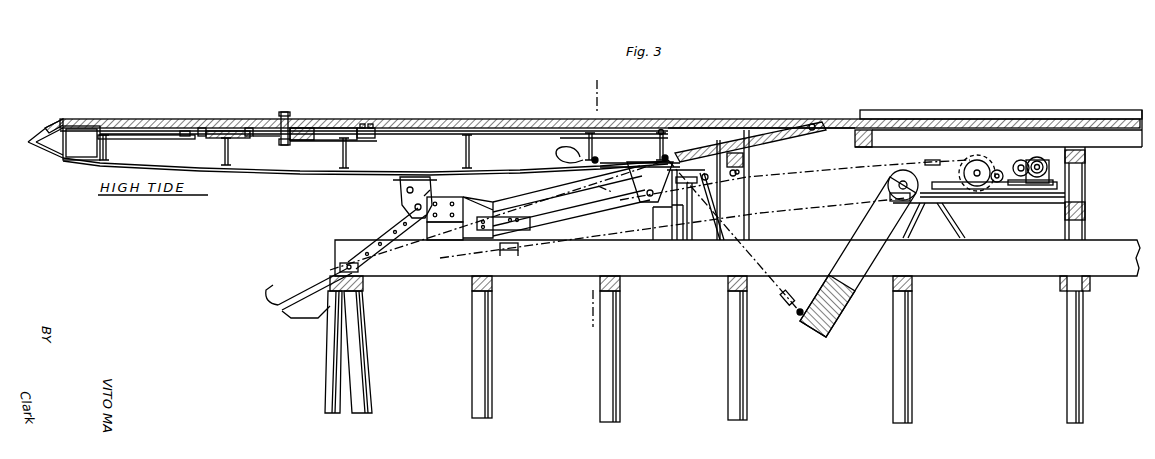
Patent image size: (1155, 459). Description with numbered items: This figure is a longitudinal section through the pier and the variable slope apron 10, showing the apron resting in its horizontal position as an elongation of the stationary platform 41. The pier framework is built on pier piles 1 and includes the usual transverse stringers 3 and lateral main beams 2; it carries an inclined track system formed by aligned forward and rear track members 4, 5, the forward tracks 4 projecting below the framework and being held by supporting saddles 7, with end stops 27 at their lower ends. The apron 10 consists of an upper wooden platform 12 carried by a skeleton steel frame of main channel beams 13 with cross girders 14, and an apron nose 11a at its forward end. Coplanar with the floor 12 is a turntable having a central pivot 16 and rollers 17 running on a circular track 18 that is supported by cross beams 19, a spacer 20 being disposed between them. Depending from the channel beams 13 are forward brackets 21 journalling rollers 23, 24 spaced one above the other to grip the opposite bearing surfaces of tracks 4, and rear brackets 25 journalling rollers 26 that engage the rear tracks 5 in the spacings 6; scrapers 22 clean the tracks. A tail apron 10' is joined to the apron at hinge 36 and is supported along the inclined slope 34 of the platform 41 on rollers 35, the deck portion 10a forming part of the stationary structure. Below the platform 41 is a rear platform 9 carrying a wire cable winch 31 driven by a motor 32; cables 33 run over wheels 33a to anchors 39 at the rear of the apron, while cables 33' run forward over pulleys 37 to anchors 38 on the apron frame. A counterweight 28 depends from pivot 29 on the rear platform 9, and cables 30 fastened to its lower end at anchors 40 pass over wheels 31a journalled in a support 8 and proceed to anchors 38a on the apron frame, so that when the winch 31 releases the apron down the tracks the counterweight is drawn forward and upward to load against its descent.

The pier piles 1 is at (619, 366).
The lateral main beams 2 is at (982, 262).
The transverse stringers 3 is at (621, 282).
The forward track member 4 is at (313, 270).
The rear track member 5 is at (562, 204).
The spacings 6 is at (590, 218).
The supporting saddles 7 is at (610, 97).
The support 8 is at (707, 232).
The rear platform 9 is at (1001, 200).
The variable slope apron 10 is at (364, 102).
The tail apron 10' is at (761, 105).
The fixed deck section 10a is at (846, 125).
The apron nose 11a is at (48, 130).
The upper wooden platform 12 is at (152, 118).
The main channel beams 13 is at (292, 175).
The cross girders 14 is at (474, 153).
The central pivot 16 is at (286, 118).
The rollers 17 is at (362, 141).
The circular track 18 is at (208, 140).
The cross beams 19 is at (252, 142).
The spacer 20 is at (305, 143).
The forward brackets 21 is at (398, 183).
The scrapers 22 is at (398, 208).
The roller 23 is at (428, 190).
The roller 24 is at (374, 242).
The rear brackets 25 is at (641, 170).
The rollers 26 is at (595, 183).
The end stops 27 is at (268, 286).
The counterweight 28 is at (831, 336).
The pivot 29 is at (896, 186).
The counterweight cables 30 is at (770, 256).
The wire cable winch 31 is at (981, 170).
The wheels 31a is at (748, 189).
The motor 32 is at (1040, 163).
The apron cables 33 is at (795, 175).
The apron cables 33' is at (672, 228).
The wheels 33a is at (738, 170).
The inclined apron 34 is at (775, 158).
The rollers 35 is at (812, 123).
The hinge 36 is at (666, 131).
The pulleys 37 is at (347, 262).
The anchors 38 is at (555, 155).
The anchors 38a is at (600, 157).
The anchors 39 is at (670, 158).
The anchors 40 is at (797, 316).
The stationary platform 41 is at (938, 119).